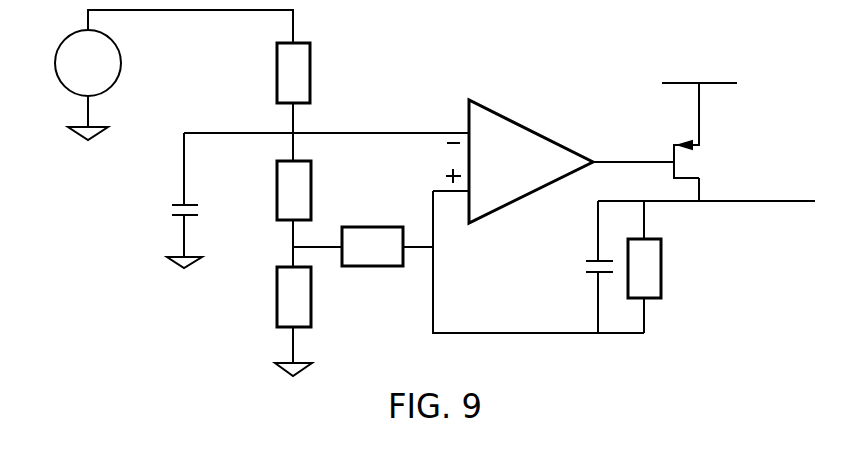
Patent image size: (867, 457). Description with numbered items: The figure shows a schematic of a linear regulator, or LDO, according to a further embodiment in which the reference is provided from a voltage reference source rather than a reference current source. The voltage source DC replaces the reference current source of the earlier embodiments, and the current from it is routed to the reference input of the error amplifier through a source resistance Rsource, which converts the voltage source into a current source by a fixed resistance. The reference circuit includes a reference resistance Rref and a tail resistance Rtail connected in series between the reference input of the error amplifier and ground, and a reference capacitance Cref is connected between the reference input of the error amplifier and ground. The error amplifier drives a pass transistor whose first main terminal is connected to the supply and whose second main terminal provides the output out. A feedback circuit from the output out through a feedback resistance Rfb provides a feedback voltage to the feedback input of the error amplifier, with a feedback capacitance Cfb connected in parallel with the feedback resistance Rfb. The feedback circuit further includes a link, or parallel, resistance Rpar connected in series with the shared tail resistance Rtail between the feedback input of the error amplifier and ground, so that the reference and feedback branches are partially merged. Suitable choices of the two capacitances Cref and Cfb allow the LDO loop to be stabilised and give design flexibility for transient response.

The voltage source DC is at (88, 85).
The source resistance Rsource is at (254, 73).
The reference capacitance Cref is at (163, 200).
The reference resistance Rref is at (270, 190).
The tail resistance Rtail is at (269, 300).
The link resistance Rpar is at (372, 262).
The element supply is at (699, 113).
The output out is at (757, 182).
The feedback capacitance Cfb is at (581, 267).
The feedback resistance Rfb is at (665, 267).